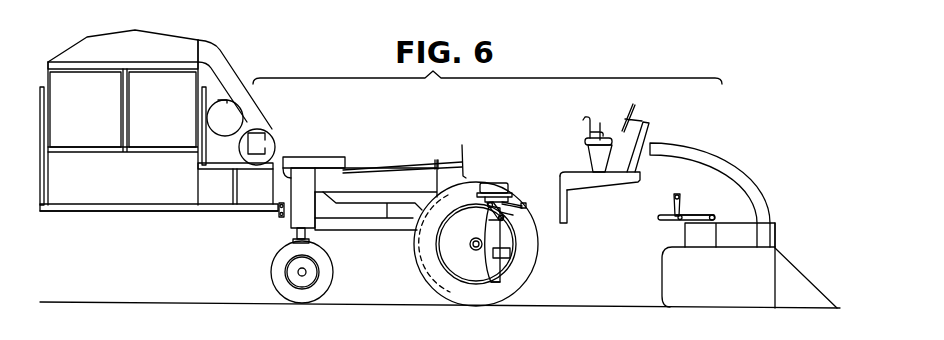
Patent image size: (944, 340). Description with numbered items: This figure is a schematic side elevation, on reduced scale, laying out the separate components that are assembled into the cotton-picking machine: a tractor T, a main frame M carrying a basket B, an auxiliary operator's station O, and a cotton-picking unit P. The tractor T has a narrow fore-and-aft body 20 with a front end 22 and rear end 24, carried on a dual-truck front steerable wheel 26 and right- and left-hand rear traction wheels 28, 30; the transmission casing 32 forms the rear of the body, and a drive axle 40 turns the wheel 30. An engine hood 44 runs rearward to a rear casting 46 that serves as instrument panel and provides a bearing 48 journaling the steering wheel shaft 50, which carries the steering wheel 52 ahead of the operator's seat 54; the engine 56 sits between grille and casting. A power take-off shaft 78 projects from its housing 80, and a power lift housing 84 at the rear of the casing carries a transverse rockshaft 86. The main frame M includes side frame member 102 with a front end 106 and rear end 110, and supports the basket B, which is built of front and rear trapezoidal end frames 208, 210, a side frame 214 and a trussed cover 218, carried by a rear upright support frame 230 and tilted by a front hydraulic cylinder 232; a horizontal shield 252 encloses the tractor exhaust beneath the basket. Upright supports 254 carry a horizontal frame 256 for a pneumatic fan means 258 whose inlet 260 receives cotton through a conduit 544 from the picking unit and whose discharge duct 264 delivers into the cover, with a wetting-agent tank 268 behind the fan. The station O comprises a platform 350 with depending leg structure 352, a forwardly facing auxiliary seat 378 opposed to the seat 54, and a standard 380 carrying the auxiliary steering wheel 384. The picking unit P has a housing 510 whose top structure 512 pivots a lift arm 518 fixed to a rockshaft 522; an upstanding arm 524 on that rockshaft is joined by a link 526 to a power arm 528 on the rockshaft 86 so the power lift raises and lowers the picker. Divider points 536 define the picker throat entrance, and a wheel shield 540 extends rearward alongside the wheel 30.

The main frame M is at (152, 217).
The basket B is at (185, 43).
The tractor T is at (389, 145).
The auxiliary operator's station O is at (575, 157).
The cotton-picking unit P is at (773, 189).
The body 20 is at (372, 230).
The front end 22 is at (290, 222).
The rear end 24 is at (501, 248).
The front steerable wheel 26 is at (270, 270).
The right-hand rear traction wheel 28 is at (520, 276).
The left-hand rear traction wheel 30 is at (478, 306).
The transmission casing 32 is at (421, 258).
The drive axle 40 is at (474, 246).
The engine hood 44 is at (281, 158).
The rear casting 46 is at (347, 178).
The bearing 48 is at (435, 160).
The steering wheel shaft 50 is at (405, 166).
The steering wheel 52 is at (462, 145).
The operator's seat 54 is at (495, 183).
The engine 56 is at (408, 221).
The power take-off shaft 78 is at (508, 263).
The housing 80 is at (500, 281).
The power lift housing 84 is at (505, 222).
The rockshaft 86 is at (513, 215).
The side frame member 102 is at (108, 205).
The front end 106 is at (272, 195).
The rear end 110 is at (48, 212).
The front trapezoidal end frame 208 is at (205, 72).
The rear trapezoidal end frame 210 is at (48, 63).
The side frame 214 is at (90, 149).
The trussed cover 218 is at (100, 40).
The rear upright support frame 230 is at (44, 190).
The front hydraulic cylinder 232 is at (202, 190).
The horizontal shield 252 is at (330, 157).
The upright supports 254 is at (233, 197).
The horizontal frame 256 is at (210, 171).
The pneumatic fan means 258 is at (267, 124).
The fan inlet 260 is at (263, 140).
The discharge duct 264 is at (222, 58).
The tank 268 is at (235, 115).
The platform 350 is at (600, 183).
The depending leg structure 352 is at (569, 207).
The auxiliary seat 378 is at (590, 117).
The standard 380 is at (646, 125).
The auxiliary steering wheel 384 is at (634, 105).
The housing 510 is at (750, 307).
The top structure 512 is at (732, 244).
The lift arm 518 is at (702, 221).
The rockshaft 522 is at (674, 220).
The upstanding arm 524 is at (685, 187).
The link 526 is at (523, 204).
The power arm 528 is at (492, 210).
The divider points 536 is at (808, 307).
The wheel shield 540 is at (676, 307).
The conduit 544 is at (718, 172).